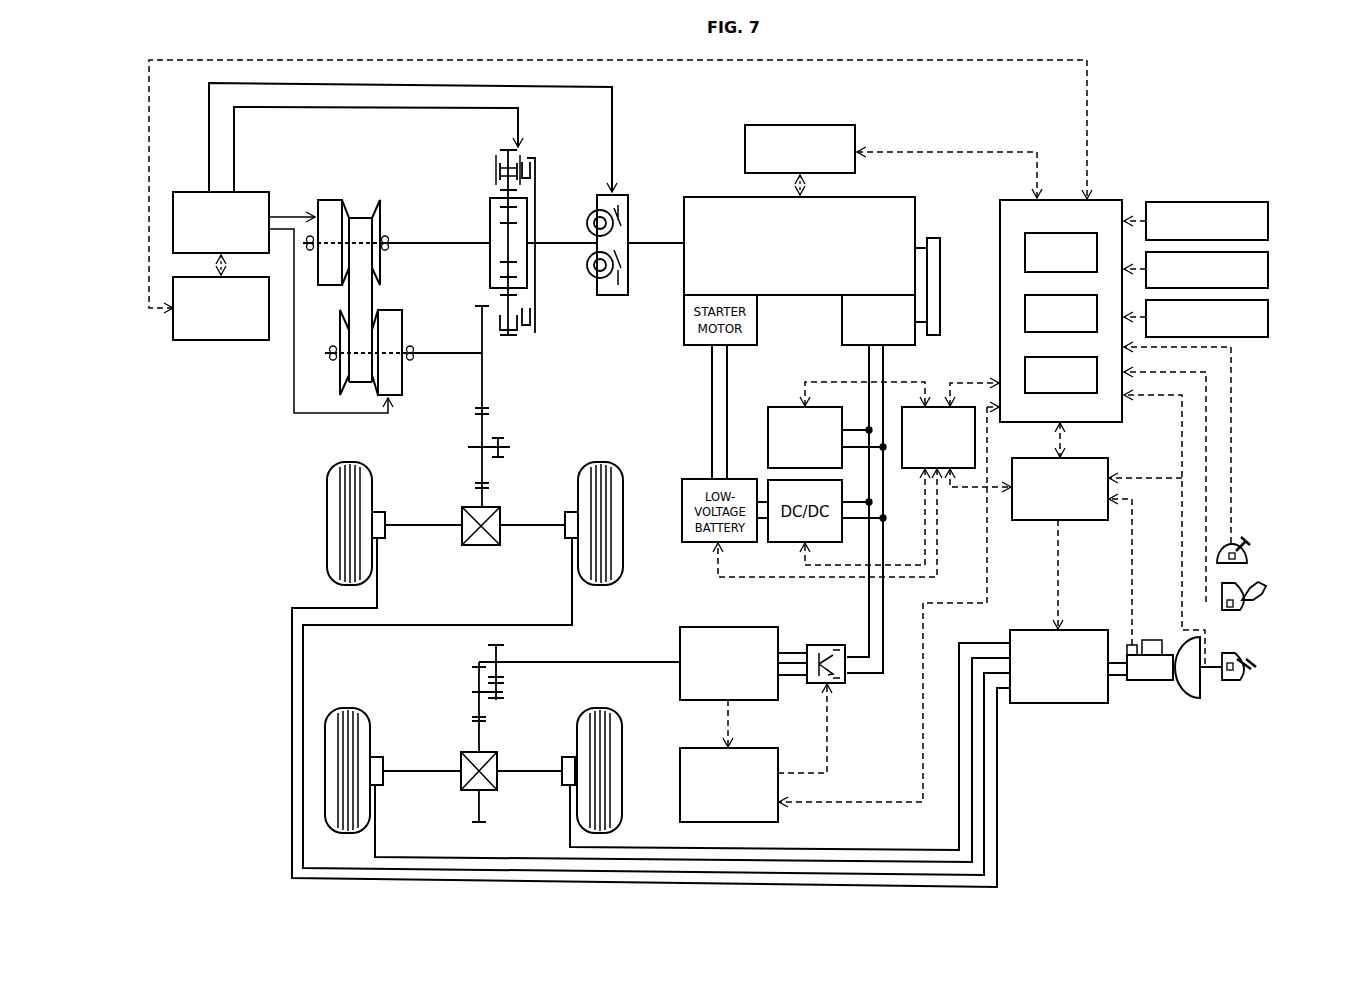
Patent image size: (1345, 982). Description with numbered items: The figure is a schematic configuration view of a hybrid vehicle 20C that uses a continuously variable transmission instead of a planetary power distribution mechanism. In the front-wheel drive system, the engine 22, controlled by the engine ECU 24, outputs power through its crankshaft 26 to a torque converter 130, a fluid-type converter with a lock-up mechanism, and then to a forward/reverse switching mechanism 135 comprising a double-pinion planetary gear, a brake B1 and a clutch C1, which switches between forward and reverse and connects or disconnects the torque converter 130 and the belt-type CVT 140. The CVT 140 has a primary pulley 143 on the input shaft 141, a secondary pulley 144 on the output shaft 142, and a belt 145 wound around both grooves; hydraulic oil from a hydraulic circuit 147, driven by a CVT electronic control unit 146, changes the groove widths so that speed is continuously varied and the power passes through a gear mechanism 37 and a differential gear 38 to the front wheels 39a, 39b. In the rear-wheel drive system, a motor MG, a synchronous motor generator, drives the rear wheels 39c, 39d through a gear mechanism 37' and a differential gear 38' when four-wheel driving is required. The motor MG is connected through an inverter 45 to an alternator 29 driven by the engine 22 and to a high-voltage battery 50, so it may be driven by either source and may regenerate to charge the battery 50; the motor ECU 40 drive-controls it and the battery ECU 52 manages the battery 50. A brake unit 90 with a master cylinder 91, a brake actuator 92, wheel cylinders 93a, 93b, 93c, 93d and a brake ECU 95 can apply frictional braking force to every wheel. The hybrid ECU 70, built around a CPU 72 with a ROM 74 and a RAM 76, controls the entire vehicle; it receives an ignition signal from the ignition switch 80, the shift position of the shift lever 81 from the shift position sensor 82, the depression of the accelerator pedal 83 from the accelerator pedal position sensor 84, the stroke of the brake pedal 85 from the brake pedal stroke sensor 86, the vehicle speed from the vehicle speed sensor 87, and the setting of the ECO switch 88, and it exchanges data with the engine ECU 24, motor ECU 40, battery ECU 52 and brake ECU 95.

The hybrid vehicle 20C is at (1160, 158).
The engine 22 is at (917, 221).
The engine ECU 24 is at (857, 126).
The crankshaft 26 is at (647, 243).
The alternator 29 is at (842, 325).
The gear mechanism 37 is at (501, 406).
The gear mechanism 37' is at (452, 733).
The differential gear 38 is at (475, 553).
The differential gear 38' is at (472, 792).
The wheel 39a is at (372, 493).
The wheel 39b is at (578, 493).
The wheel 39c is at (368, 717).
The wheel 39d is at (580, 717).
The motor ECU 40 is at (700, 748).
The inverter 45 is at (828, 645).
The high-voltage battery 50 is at (768, 418).
The battery ECU 52 is at (902, 460).
The hybrid ECU 70 is at (1061, 281).
The CPU 72 is at (1075, 237).
The ROM 74 is at (1075, 299).
The RAM 76 is at (1075, 361).
The ignition switch 80 is at (1268, 220).
The shift lever 81 is at (1247, 543).
The shift position sensor 82 is at (1247, 556).
The accelerator pedal 83 is at (1257, 600).
The accelerator pedal position sensor 84 is at (1247, 610).
The brake pedal 85 is at (1247, 658).
The brake pedal stroke sensor 86 is at (1247, 674).
The vehicle speed sensor 87 is at (1268, 272).
The ECO switch 88 is at (1268, 318).
The brake unit 90 is at (1034, 804).
The master cylinder 91 is at (1152, 676).
The brake actuator 92 is at (1047, 630).
The wheel cylinder 93a is at (387, 538).
The wheel cylinder 93b is at (563, 538).
The wheel cylinder 93c is at (375, 757).
The wheel cylinder 93d is at (570, 757).
The brake ECU 95 is at (1103, 458).
The torque converter 130 is at (625, 190).
The forward/reverse switching mechanism 135 is at (538, 281).
The belt-type CVT 140 is at (382, 190).
The input shaft 141 is at (472, 245).
The output shaft 142 is at (478, 354).
The primary pulley 143 is at (332, 200).
The secondary pulley 144 is at (403, 323).
The belt 145 is at (373, 317).
The CVT electronic control unit 146 is at (218, 340).
The hydraulic circuit 147 is at (253, 192).
The brake B1 is at (502, 163).
The clutch C1 is at (534, 163).
The motor MG is at (708, 627).